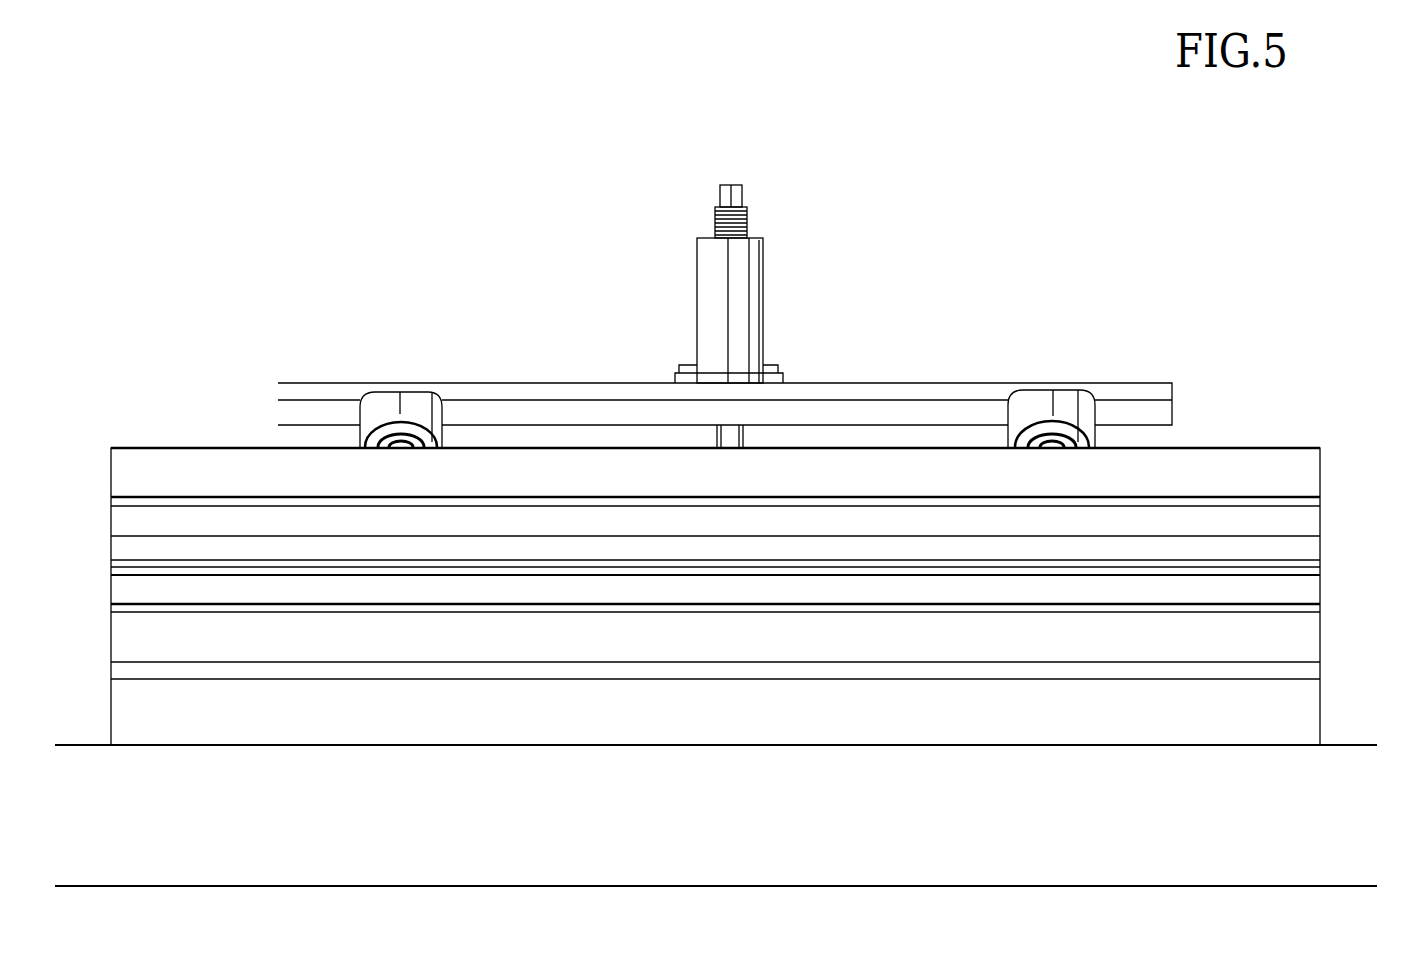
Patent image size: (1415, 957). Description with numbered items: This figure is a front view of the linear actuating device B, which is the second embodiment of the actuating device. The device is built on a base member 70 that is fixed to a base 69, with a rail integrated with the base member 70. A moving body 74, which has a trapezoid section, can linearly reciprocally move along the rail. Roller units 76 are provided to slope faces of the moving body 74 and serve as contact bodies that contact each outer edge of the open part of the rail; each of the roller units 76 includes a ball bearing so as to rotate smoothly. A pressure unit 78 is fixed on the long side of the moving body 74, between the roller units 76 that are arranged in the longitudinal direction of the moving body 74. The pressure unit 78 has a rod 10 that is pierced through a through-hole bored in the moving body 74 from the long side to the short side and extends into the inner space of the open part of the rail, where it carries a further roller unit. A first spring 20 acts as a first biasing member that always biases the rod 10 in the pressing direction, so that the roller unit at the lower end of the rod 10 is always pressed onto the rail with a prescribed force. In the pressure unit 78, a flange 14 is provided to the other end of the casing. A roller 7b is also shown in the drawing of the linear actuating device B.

The linear actuating device B is at (374, 104).
The roller 7b is at (377, 413).
The rod 10 is at (728, 438).
The flange 14 is at (745, 380).
The first spring 20 is at (750, 223).
The base 69 is at (87, 763).
The base member 70 is at (1342, 588).
The moving body 74 is at (928, 395).
The roller units 76 is at (1065, 407).
The pressure unit 78 is at (740, 307).